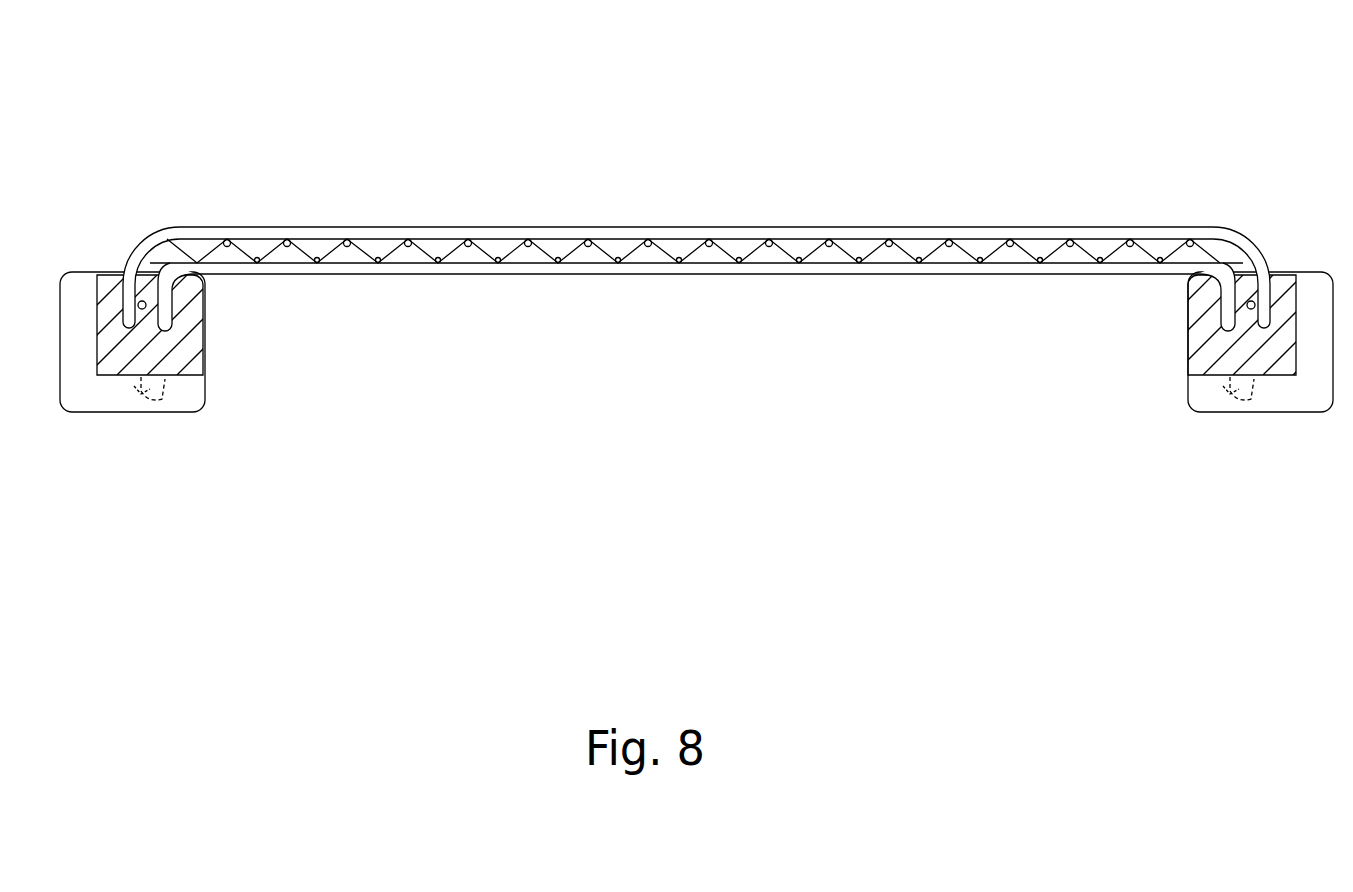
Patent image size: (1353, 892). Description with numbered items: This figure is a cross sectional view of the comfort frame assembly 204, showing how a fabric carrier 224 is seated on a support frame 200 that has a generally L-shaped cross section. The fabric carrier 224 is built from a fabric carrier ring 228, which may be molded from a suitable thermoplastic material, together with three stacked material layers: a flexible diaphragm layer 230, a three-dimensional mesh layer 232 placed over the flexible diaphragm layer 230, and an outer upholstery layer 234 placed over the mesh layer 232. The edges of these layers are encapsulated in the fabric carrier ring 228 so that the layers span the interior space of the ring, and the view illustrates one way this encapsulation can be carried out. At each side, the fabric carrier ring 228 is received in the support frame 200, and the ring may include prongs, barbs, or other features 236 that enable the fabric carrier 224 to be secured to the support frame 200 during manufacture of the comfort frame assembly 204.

The comfort frame assembly 204 is at (472, 97).
The fabric carrier 224 is at (636, 168).
The fabric carrier ring 228 is at (696, 325).
The flexible diaphragm layer 230 is at (696, 350).
The three-dimensional mesh layer 232 is at (693, 328).
The outer upholstery layer 234 is at (696, 169).
The support frame 200 is at (690, 415).
The features 236 is at (722, 462).